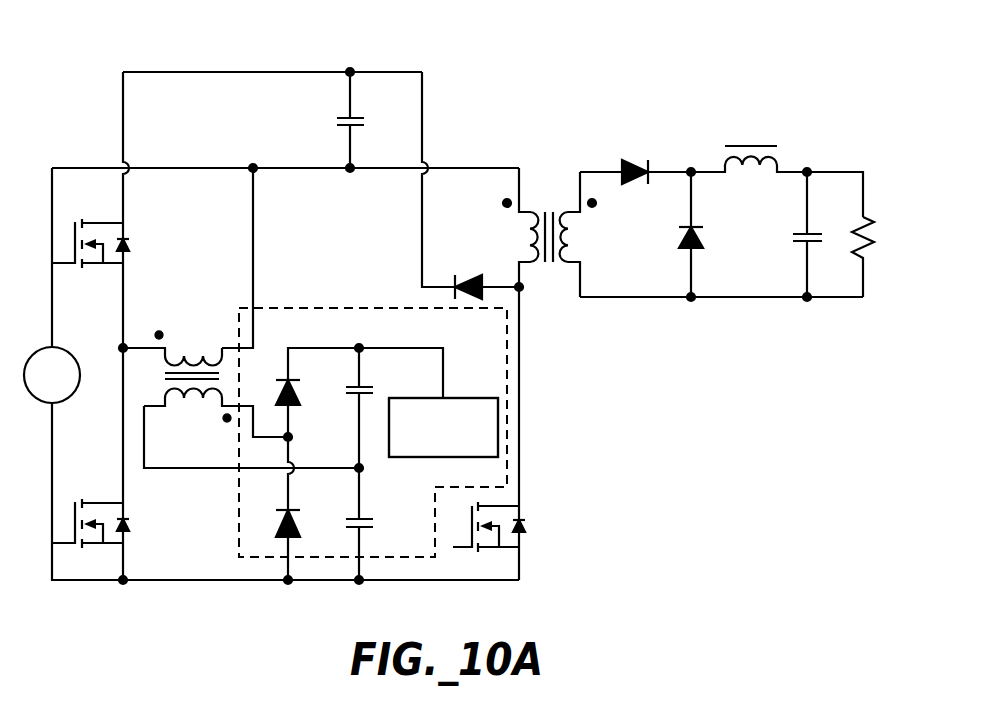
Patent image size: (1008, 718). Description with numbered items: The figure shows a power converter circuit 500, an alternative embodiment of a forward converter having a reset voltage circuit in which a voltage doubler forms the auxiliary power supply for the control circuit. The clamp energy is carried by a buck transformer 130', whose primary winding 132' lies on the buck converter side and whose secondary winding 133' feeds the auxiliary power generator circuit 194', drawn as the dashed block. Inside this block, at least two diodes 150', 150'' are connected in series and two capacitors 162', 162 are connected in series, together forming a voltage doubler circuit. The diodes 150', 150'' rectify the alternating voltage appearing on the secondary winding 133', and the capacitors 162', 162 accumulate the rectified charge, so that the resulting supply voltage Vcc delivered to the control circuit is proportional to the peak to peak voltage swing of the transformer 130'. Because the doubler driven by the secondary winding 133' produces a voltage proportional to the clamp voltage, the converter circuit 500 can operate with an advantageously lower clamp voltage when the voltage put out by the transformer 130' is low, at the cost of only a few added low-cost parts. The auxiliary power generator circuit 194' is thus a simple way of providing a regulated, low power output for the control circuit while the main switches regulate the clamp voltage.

The power converter circuit 500 is at (696, 40).
The buck transformer 130' is at (205, 354).
The primary winding 132' is at (172, 332).
The secondary winding 133' is at (216, 415).
The auxiliary power generator circuit 194' is at (373, 424).
The diode 150' is at (315, 408).
The diode 150'' is at (315, 508).
The capacitor 162' is at (386, 408).
The auxiliary capacitor 162 is at (382, 524).